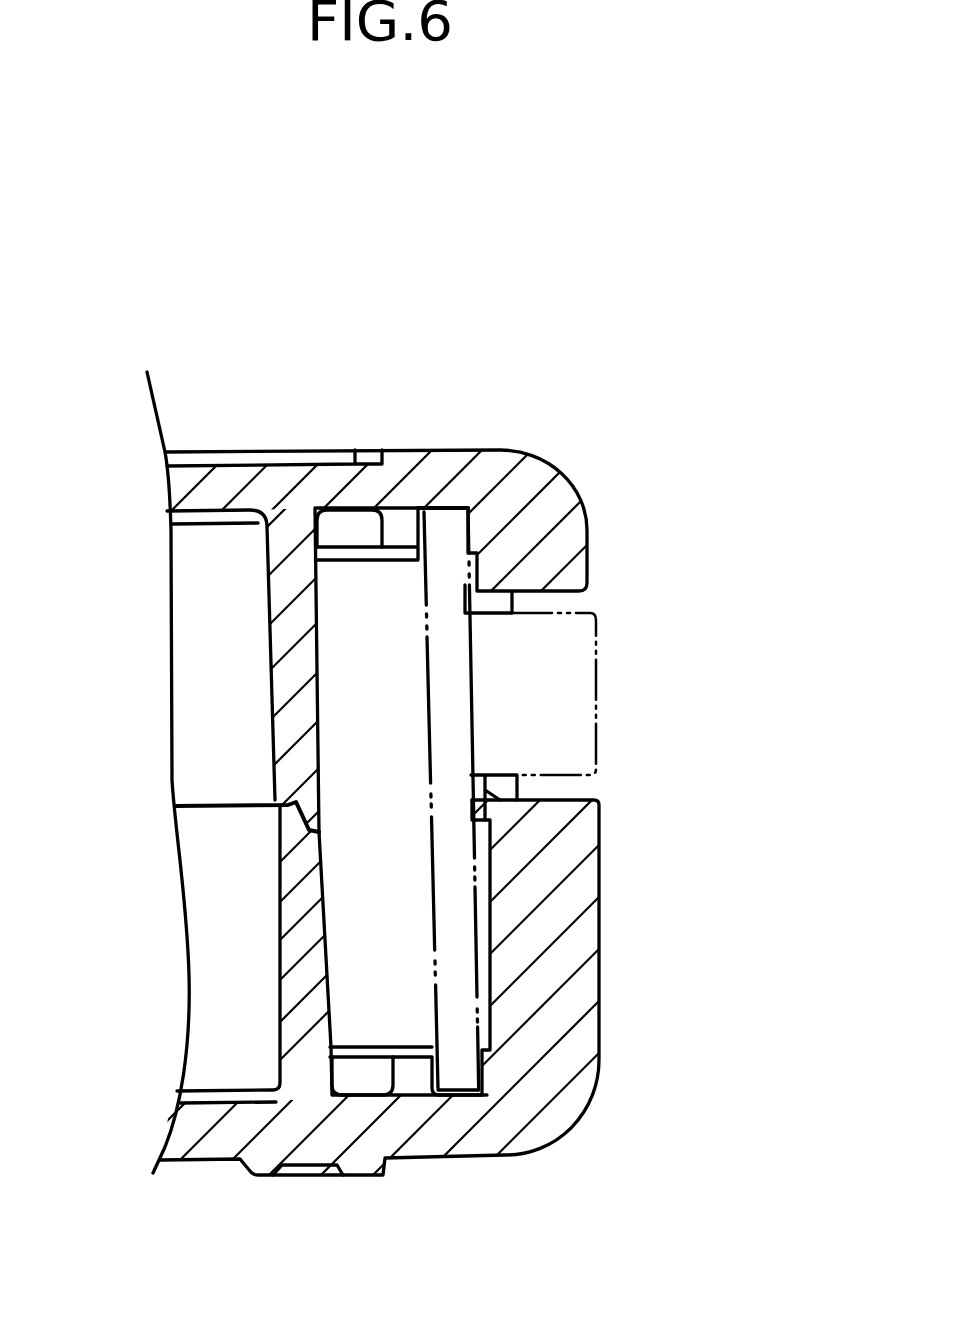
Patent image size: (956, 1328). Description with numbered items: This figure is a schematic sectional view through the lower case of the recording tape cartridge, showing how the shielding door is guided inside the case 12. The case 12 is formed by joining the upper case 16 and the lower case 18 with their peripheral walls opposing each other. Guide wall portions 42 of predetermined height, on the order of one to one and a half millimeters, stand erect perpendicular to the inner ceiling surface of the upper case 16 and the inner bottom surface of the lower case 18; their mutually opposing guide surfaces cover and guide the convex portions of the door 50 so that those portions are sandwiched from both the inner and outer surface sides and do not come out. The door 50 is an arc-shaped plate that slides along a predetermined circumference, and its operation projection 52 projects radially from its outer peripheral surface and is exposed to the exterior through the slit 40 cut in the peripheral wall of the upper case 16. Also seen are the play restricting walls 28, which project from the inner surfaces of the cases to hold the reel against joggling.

The case 12 is at (478, 778).
The upper case 16 is at (467, 451).
The lower case 18 is at (560, 1138).
The play restricting walls 28 is at (275, 698).
The slit 40 is at (553, 594).
The guide wall portions 42 is at (393, 528).
The door 50 is at (477, 972).
The operation projection 52 is at (597, 687).